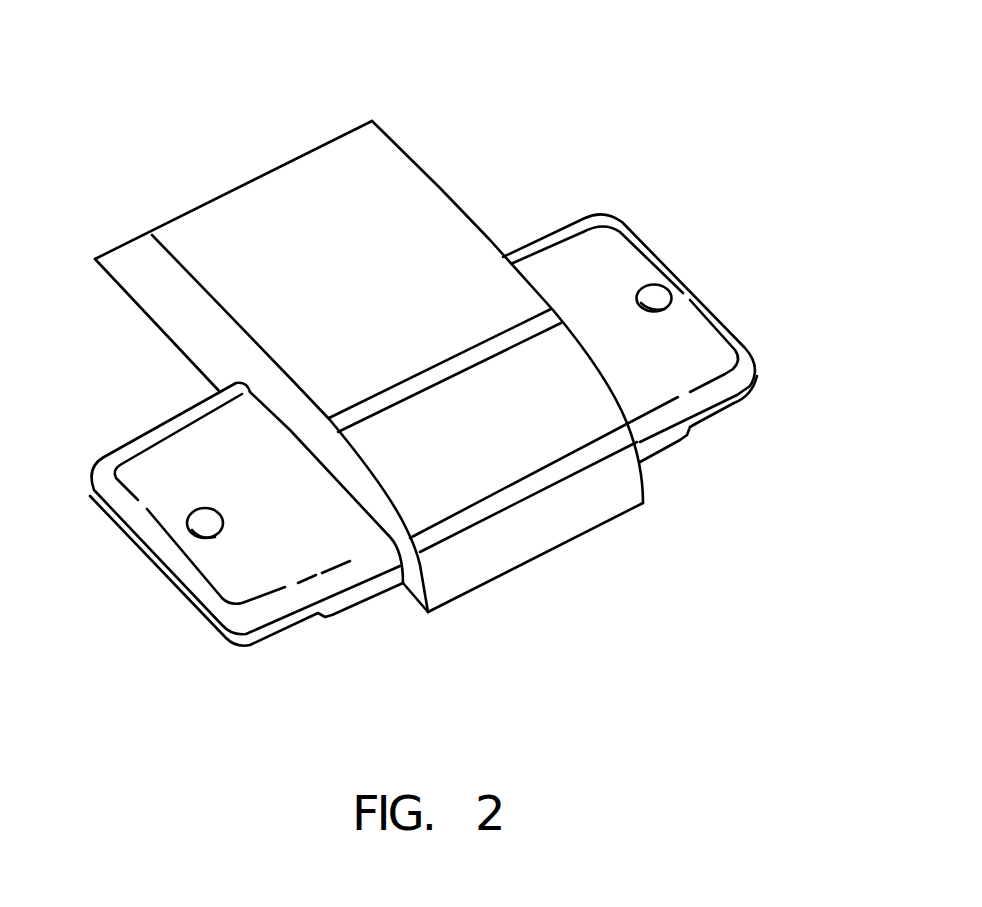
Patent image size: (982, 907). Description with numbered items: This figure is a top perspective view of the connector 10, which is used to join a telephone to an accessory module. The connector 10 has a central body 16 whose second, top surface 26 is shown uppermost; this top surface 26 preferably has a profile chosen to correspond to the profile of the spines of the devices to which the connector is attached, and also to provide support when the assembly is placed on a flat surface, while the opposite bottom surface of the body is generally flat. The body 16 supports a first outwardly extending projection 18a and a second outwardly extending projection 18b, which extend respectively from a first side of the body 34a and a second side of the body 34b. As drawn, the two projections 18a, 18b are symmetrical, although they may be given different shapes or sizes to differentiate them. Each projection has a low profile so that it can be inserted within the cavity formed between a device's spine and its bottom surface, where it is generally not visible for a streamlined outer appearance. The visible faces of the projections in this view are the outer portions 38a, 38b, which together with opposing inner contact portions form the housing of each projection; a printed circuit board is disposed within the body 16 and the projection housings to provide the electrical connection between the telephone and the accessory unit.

The connector 10 is at (590, 117).
The body 16 is at (277, 187).
The top surface 26 is at (368, 284).
The first side of the body 34a is at (440, 188).
The second side of the body 34b is at (155, 282).
The first projection 18a is at (717, 340).
The second projection 18b is at (248, 635).
The outer portion 38a is at (620, 286).
The outer portion 38b is at (260, 471).